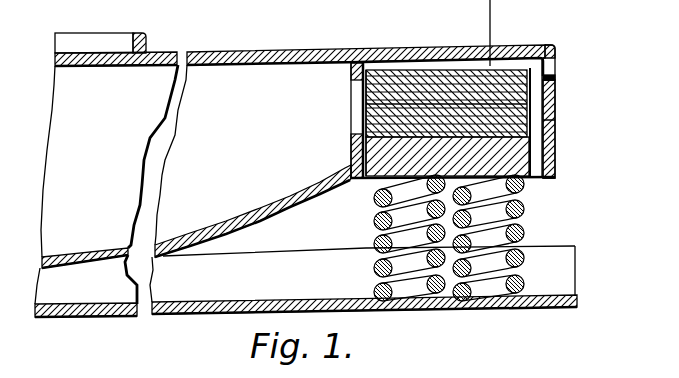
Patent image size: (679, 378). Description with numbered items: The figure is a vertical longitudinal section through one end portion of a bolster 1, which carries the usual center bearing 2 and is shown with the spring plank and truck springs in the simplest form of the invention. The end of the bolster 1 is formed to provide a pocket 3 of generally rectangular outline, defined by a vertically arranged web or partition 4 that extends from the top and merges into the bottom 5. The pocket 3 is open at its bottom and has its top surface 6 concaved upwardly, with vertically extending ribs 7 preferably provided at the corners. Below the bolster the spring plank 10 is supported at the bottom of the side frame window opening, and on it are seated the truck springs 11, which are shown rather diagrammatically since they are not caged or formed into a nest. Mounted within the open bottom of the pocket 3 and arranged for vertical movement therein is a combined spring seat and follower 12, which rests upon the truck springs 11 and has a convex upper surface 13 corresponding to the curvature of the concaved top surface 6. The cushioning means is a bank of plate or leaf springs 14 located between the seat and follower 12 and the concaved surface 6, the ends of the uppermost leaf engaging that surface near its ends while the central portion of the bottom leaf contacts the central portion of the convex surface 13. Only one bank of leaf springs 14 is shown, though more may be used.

The bolster 1 is at (289, 50).
The center bearing 2 is at (145, 35).
The pocket 3 is at (441, 63).
The web or partition 4 is at (351, 150).
The bottom 5 is at (240, 222).
The top surface 6 is at (391, 62).
The ribs 7 is at (361, 110).
The spring plank 10 is at (196, 316).
The truck springs 11 is at (372, 226).
The combined spring seat and follower 12 is at (500, 160).
The convex upper surface 13 is at (492, 139).
The plate or leaf springs 14 is at (505, 114).